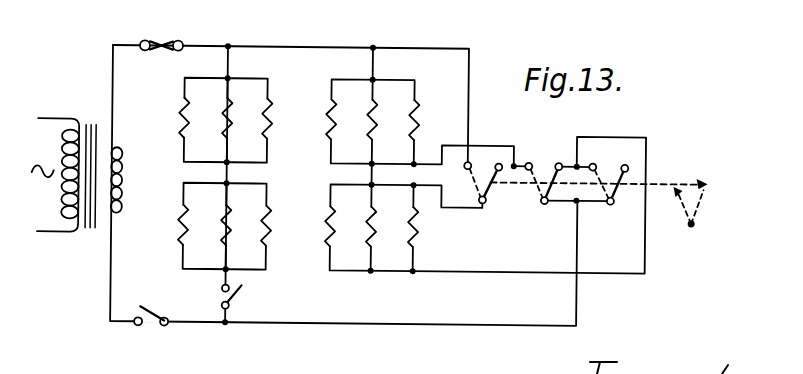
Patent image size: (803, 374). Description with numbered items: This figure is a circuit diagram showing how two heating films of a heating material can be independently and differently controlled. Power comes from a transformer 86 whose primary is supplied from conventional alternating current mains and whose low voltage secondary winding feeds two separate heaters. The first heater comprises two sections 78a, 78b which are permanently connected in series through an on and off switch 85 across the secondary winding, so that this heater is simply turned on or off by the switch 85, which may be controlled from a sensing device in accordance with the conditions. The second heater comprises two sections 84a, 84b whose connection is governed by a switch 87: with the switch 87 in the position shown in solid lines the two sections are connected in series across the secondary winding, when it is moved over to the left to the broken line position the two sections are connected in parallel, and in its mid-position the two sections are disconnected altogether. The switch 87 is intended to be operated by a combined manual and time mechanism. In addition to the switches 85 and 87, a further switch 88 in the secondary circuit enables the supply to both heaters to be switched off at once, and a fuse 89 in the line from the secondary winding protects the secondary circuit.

The heater section 78a is at (182, 128).
The heater section 78b is at (182, 204).
The heater section 84a is at (328, 128).
The heater section 84b is at (332, 232).
The on and off switch 85 is at (234, 302).
The transformer 86 is at (77, 190).
The switch 87 is at (573, 204).
The switch 88 is at (151, 327).
The fuse 89 is at (163, 34).